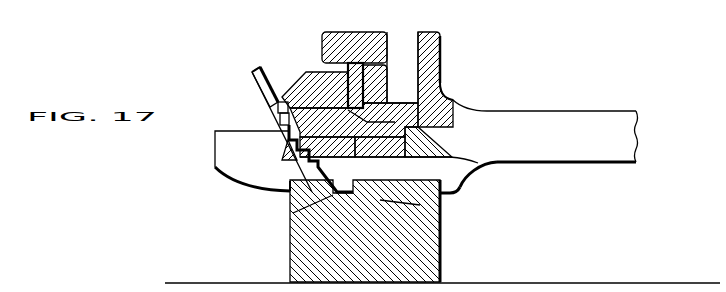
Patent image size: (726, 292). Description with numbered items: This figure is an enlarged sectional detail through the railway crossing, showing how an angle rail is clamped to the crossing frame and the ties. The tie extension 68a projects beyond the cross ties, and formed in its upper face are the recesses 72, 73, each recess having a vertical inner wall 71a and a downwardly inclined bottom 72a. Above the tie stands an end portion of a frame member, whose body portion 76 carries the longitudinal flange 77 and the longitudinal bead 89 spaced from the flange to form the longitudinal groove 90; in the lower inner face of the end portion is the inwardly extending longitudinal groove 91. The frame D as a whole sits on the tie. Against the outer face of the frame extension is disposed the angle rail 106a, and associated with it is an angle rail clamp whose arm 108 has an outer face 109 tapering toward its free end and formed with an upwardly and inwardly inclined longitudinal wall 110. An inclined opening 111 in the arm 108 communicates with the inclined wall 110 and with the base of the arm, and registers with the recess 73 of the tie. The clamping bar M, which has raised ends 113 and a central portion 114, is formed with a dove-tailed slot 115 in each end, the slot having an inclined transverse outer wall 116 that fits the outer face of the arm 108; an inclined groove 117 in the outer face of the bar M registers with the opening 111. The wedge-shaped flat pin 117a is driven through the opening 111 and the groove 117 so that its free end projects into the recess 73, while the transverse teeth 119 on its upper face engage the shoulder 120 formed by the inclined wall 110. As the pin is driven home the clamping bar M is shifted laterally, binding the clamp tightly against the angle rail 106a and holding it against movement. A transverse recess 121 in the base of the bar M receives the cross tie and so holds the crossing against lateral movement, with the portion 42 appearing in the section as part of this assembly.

The angle rail 106a is at (372, 15).
The arm of angle rail clamp 108 is at (313, 72).
The outer face of arm 109 is at (295, 110).
The longitudinal bead 89 is at (390, 62).
The longitudinal groove 90 is at (402, 92).
The longitudinal flange 77 is at (441, 36).
The die punch D is at (445, 45).
The body portion 76 is at (455, 98).
The wedge die insert 42 is at (447, 152).
The recess 72 is at (348, 178).
The recess 73 is at (392, 118).
The raised end 113 is at (345, 150).
The inclined groove 117 is at (265, 107).
The wedge-shaped flat pin 117a is at (258, 68).
The shoulder 120 is at (279, 109).
The transverse teeth 119 is at (279, 112).
The inclined longitudinal wall 110 is at (277, 152).
The inclined opening 111 is at (283, 167).
The transverse recess 121 is at (287, 200).
The tie extension 68a is at (430, 242).
The vertical inner wall 71a is at (420, 205).
The inclined bottom 72a is at (293, 213).
The clamping bar M is at (625, 142).
The dove-tailed slot 115 is at (489, 108).
The longitudinal groove 91 is at (476, 111).
The central portion 114 is at (606, 161).
The inclined transverse outer wall 116 is at (488, 170).